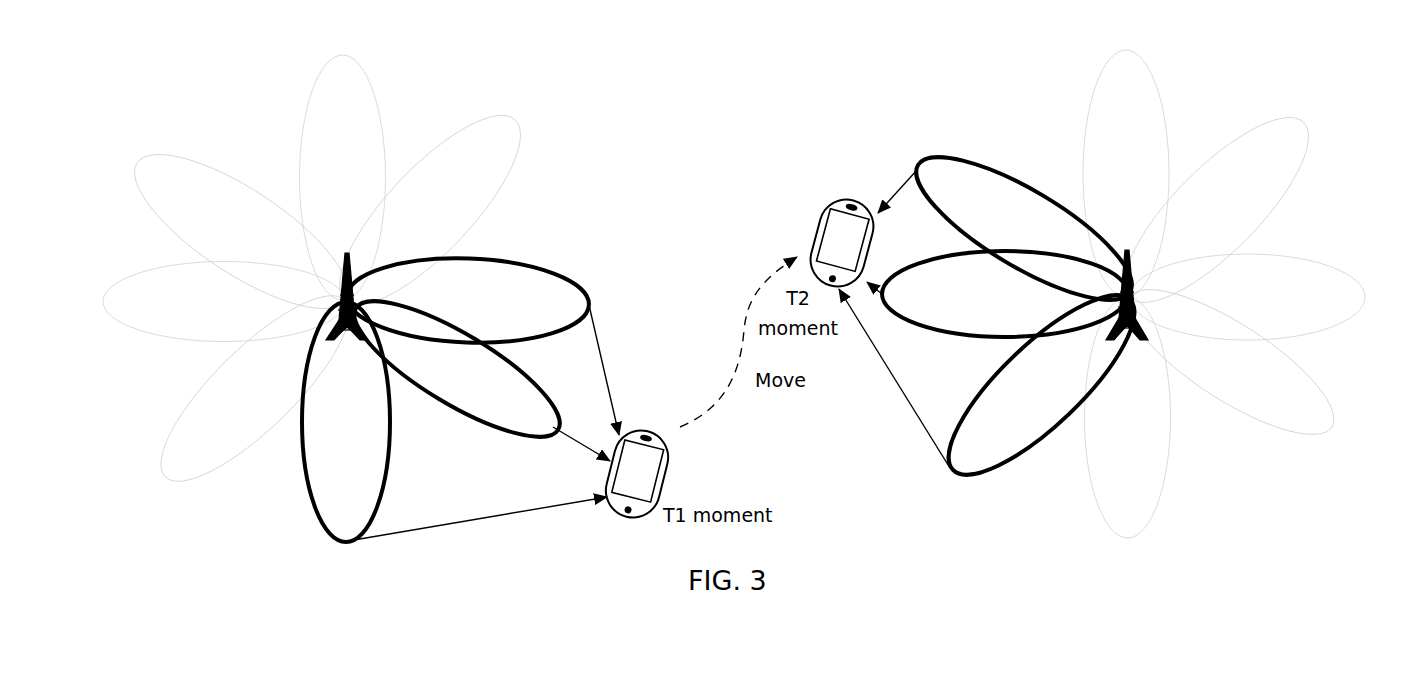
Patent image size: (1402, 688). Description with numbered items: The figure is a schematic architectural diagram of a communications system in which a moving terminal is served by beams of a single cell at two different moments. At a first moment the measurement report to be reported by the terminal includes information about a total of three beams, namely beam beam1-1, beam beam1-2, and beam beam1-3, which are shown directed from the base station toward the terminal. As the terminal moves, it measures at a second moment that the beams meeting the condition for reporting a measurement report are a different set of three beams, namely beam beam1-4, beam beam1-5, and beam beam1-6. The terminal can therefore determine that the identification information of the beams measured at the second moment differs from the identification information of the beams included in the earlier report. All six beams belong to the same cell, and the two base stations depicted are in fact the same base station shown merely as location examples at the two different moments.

The beam beam1-1 is at (496, 338).
The beam beam1-2 is at (450, 408).
The beam beam1-3 is at (311, 466).
The beam beam1-4 is at (994, 415).
The beam beam1-5 is at (942, 258).
The beam beam1-6 is at (985, 170).